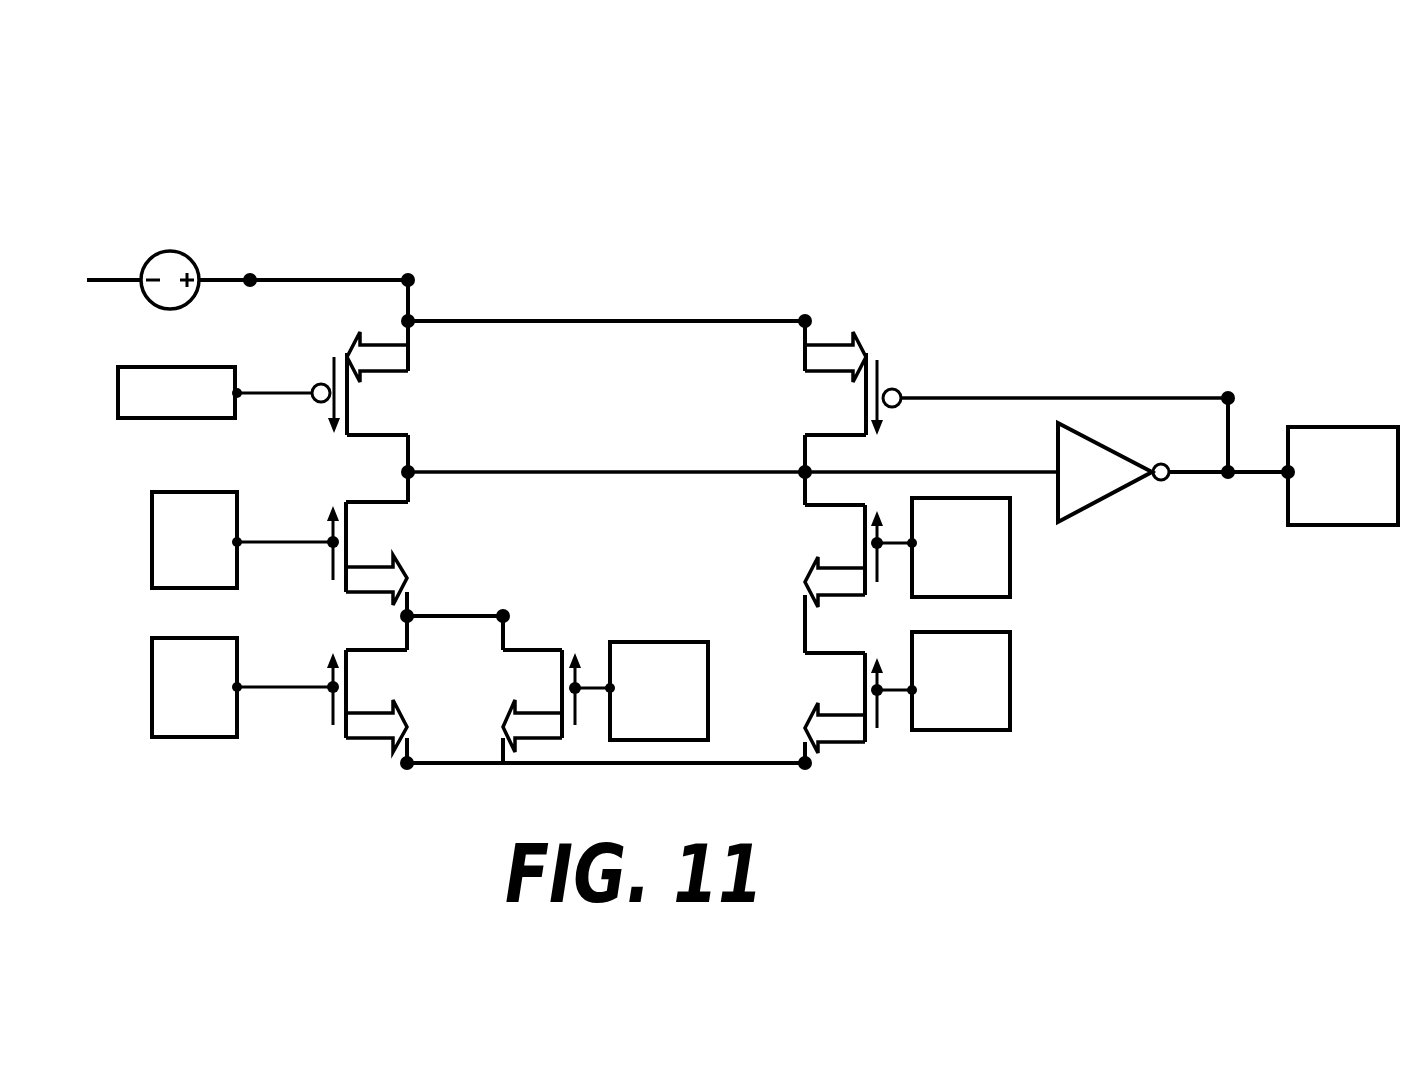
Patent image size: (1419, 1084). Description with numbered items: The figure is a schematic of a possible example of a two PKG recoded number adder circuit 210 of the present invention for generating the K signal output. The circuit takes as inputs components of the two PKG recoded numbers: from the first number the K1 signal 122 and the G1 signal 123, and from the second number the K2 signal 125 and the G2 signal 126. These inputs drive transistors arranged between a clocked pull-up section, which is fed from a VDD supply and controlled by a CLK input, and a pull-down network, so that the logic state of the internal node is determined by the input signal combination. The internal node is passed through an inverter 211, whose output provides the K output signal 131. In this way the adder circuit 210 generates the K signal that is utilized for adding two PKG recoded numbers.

The two PKG recoded number adder circuit 210 is at (320, 165).
The inverter 211 is at (1112, 492).
The K output signal 131 is at (1370, 514).
The K1 signal 122 is at (222, 576).
The K2 signal 125 is at (222, 723).
The G2 signal 126 is at (632, 727).
The G1 signal 123 is at (934, 717).